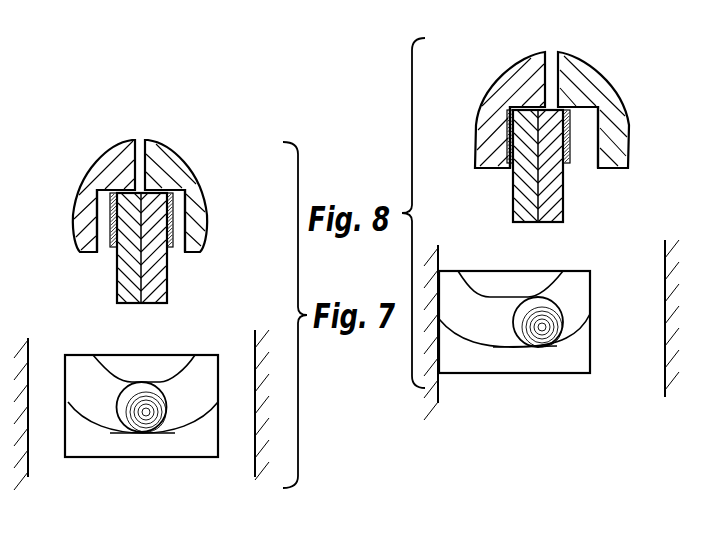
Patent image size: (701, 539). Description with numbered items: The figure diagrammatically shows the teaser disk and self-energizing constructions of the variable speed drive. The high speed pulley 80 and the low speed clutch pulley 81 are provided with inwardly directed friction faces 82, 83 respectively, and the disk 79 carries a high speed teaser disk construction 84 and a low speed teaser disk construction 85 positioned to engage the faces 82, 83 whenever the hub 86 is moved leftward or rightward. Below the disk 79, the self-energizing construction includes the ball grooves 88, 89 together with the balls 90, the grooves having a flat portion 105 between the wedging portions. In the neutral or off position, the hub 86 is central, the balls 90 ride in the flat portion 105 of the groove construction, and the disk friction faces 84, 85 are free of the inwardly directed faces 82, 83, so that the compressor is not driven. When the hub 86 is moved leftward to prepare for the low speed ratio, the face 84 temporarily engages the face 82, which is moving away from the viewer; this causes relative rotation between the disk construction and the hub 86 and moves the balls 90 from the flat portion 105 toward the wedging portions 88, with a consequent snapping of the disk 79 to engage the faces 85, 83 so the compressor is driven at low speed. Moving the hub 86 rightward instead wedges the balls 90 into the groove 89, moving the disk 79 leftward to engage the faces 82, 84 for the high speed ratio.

In FIG. 7, the disk 79 is at (160, 297).
In FIG. 8, the disk 79 is at (558, 215).
In FIG. 7, the high speed pulley 80 is at (100, 165).
In FIG. 8, the high speed pulley 80 is at (512, 73).
In FIG. 7, the low speed clutch pulley 81 is at (180, 163).
In FIG. 8, the low speed clutch pulley 81 is at (603, 82).
In FIG. 7, the friction face 82 is at (92, 210).
In FIG. 8, the friction face 82 is at (508, 143).
In FIG. 7, the friction face 83 is at (190, 198).
In FIG. 8, the friction face 83 is at (600, 137).
In FIG. 7, the high speed teaser disk construction 84 is at (110, 227).
In FIG. 8, the high speed teaser disk construction 84 is at (508, 120).
In FIG. 7, the low speed teaser disk construction 85 is at (173, 237).
In FIG. 8, the low speed teaser disk construction 85 is at (565, 162).
In FIG. 7, the hub 86 is at (188, 452).
In FIG. 8, the hub 86 is at (568, 370).
In FIG. 7, the ball groove 88 is at (210, 373).
In FIG. 8, the ball groove 88 is at (577, 313).
In FIG. 7, the ball groove 89 is at (77, 372).
In FIG. 8, the ball groove 89 is at (455, 280).
In FIG. 7, the ball 90 is at (133, 390).
In FIG. 8, the ball 90 is at (560, 308).
In FIG. 7, the flat portion 105 is at (133, 433).
In FIG. 8, the flat portion 105 is at (517, 347).